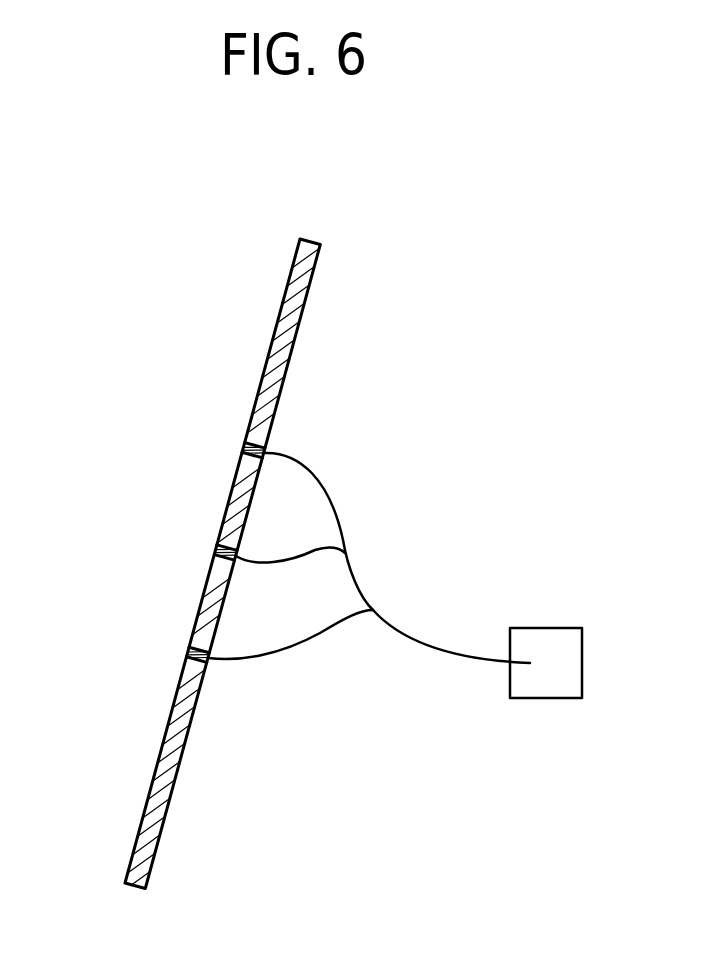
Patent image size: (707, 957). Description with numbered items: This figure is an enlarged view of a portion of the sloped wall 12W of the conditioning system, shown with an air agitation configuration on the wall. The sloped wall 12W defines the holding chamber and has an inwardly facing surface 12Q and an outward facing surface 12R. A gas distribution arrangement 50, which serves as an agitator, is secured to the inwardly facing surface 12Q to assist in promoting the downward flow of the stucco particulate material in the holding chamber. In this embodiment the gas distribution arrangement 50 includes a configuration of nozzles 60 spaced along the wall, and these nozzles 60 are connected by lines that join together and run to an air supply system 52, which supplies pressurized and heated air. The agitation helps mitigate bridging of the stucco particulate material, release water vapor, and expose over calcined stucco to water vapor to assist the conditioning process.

The sloped wall 12W is at (307, 248).
The inwardly facing surface 12Q is at (130, 862).
The outward facing surface 12R is at (160, 840).
The gas distribution arrangement 50 is at (365, 485).
The air supply system 52 is at (543, 638).
The nozzles 60 is at (198, 550).